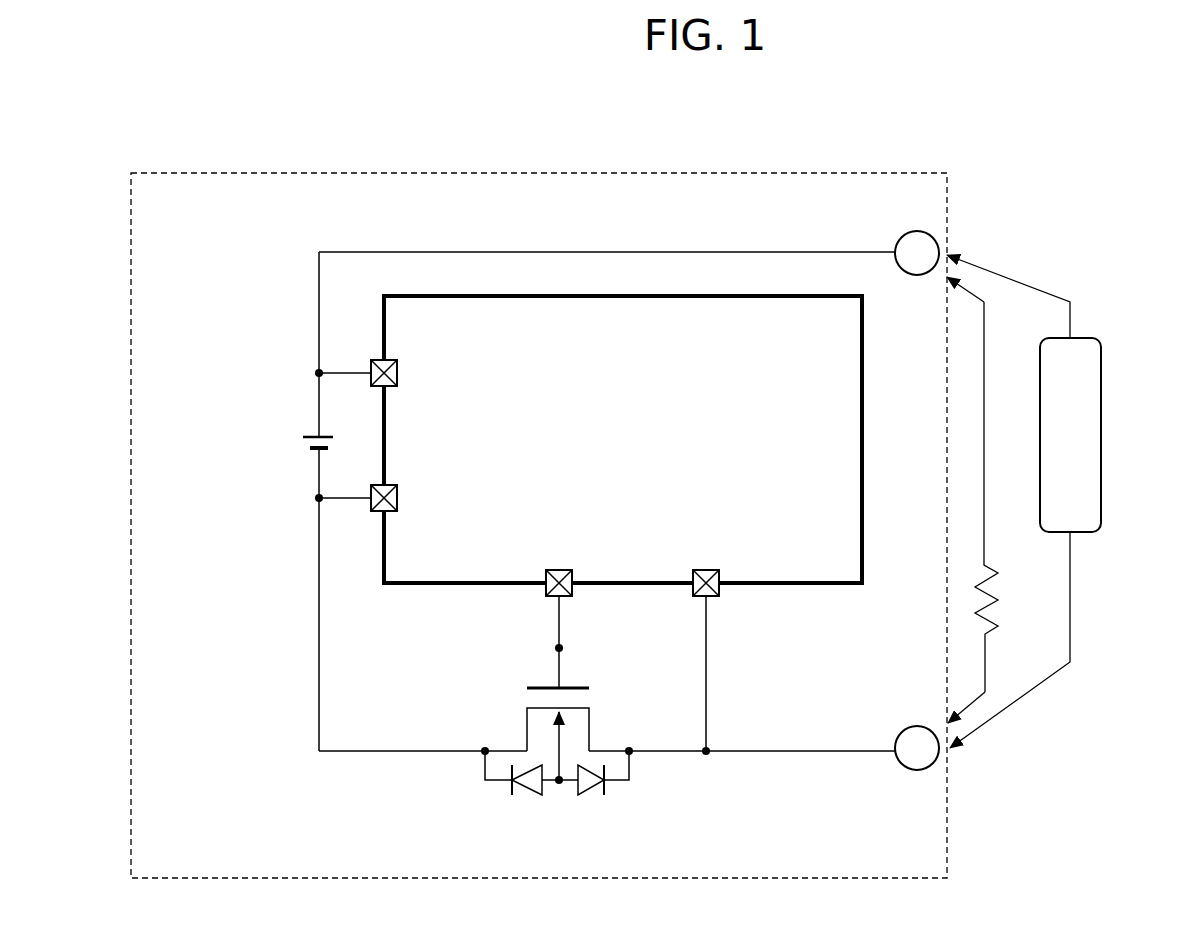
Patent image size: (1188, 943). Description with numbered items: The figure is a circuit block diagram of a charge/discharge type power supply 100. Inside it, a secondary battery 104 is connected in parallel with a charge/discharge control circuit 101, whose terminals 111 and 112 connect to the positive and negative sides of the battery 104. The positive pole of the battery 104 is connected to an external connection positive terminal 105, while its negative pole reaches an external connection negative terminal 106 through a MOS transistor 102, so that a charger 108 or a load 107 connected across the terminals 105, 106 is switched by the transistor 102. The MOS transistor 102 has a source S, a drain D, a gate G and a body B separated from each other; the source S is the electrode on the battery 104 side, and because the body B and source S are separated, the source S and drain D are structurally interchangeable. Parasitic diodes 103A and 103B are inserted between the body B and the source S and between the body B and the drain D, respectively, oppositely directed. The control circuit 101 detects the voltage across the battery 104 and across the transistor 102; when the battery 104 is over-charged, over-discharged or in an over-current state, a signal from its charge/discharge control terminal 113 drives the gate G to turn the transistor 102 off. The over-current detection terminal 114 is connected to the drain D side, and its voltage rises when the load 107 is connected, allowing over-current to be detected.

The charge/discharge type power supply 100 is at (560, 173).
The charge/discharge control circuit 101 is at (442, 296).
The MOS transistor 102 is at (595, 723).
The parasitic diode 103A is at (530, 795).
The parasitic diode 103B is at (595, 795).
The secondary battery 104 is at (301, 446).
The external connection positive terminal 105 is at (905, 234).
The external connection negative terminal 106 is at (907, 768).
The load 107 is at (978, 597).
The charger 108 is at (1102, 427).
The terminal 111 is at (398, 373).
The terminal 112 is at (398, 498).
The charge/discharge control terminal 113 is at (560, 570).
The over-current detection terminal 114 is at (706, 570).
The gate G is at (557, 648).
The source S is at (484, 750).
The drain D is at (630, 750).
The body B is at (558, 792).